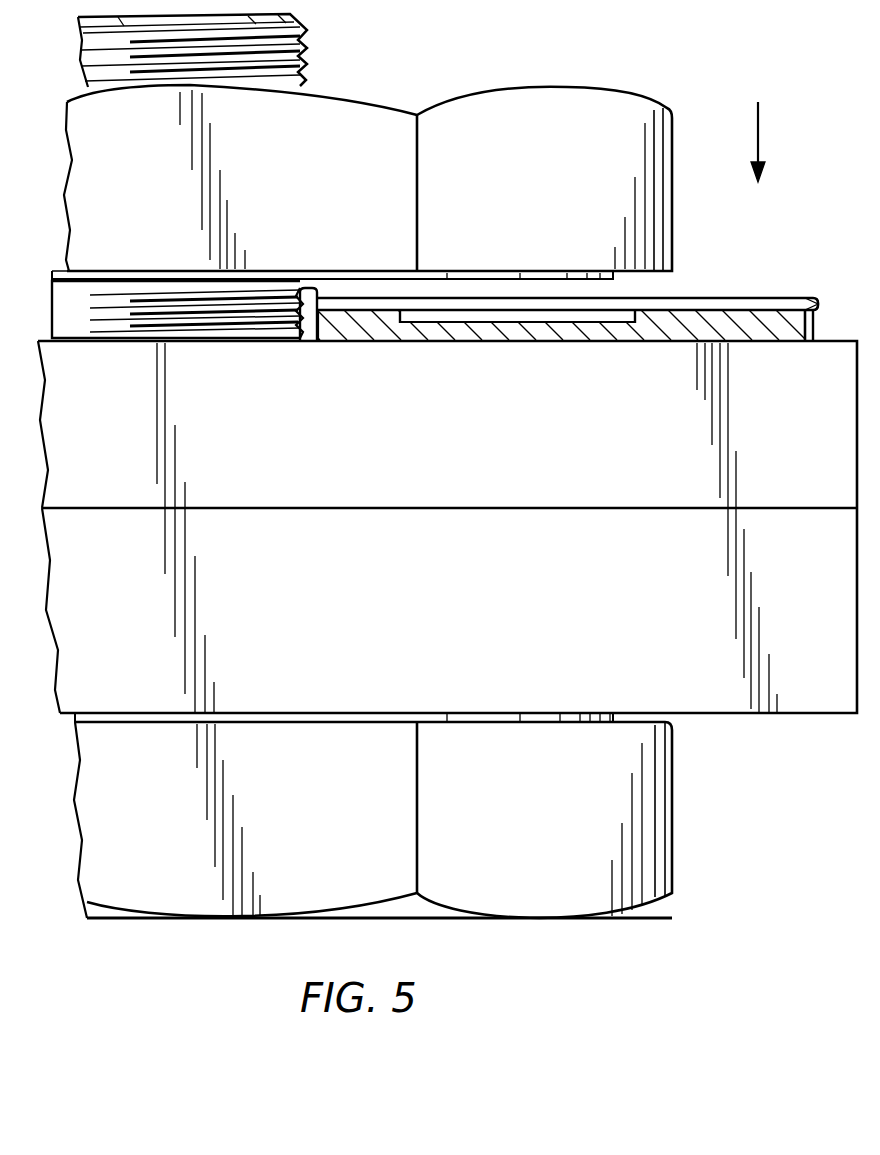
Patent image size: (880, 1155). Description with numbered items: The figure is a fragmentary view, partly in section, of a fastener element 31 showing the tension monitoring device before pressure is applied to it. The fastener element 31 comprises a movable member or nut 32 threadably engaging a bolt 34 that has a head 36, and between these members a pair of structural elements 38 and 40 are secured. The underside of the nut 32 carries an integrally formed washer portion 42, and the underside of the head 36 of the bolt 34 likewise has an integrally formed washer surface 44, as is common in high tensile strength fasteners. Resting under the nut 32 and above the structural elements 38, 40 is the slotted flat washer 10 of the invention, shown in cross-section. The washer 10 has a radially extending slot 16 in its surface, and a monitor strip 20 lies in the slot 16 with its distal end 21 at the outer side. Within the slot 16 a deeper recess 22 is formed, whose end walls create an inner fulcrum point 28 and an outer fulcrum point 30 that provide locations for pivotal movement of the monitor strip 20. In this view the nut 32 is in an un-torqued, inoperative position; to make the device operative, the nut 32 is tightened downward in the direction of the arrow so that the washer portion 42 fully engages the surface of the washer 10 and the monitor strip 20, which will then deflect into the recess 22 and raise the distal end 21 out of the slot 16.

The flat washer 10 is at (683, 332).
The slot 16 is at (313, 341).
The monitor strip 20 is at (675, 303).
The distal end 21 is at (813, 300).
The recess 22 is at (547, 322).
The inner fulcrum point 28 is at (402, 325).
The outer fulcrum point 30 is at (617, 322).
The fastener element 31 is at (688, 834).
The nut 32 is at (590, 105).
The bolt 34 is at (308, 33).
The head 36 is at (657, 775).
The structural element 38 is at (632, 495).
The structural element 40 is at (618, 581).
The washer portion 42 is at (433, 275).
The washer surface 44 is at (547, 716).